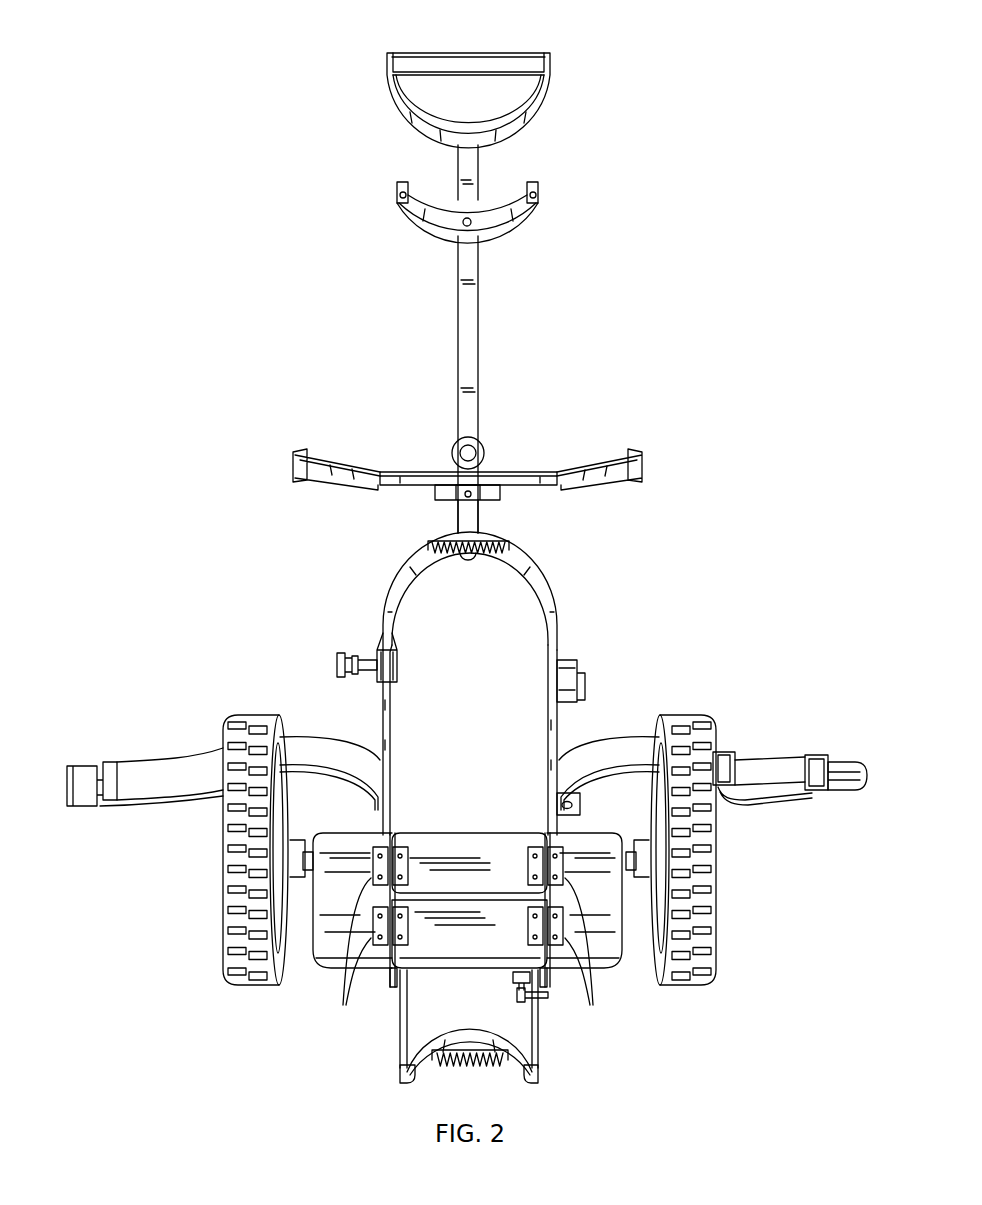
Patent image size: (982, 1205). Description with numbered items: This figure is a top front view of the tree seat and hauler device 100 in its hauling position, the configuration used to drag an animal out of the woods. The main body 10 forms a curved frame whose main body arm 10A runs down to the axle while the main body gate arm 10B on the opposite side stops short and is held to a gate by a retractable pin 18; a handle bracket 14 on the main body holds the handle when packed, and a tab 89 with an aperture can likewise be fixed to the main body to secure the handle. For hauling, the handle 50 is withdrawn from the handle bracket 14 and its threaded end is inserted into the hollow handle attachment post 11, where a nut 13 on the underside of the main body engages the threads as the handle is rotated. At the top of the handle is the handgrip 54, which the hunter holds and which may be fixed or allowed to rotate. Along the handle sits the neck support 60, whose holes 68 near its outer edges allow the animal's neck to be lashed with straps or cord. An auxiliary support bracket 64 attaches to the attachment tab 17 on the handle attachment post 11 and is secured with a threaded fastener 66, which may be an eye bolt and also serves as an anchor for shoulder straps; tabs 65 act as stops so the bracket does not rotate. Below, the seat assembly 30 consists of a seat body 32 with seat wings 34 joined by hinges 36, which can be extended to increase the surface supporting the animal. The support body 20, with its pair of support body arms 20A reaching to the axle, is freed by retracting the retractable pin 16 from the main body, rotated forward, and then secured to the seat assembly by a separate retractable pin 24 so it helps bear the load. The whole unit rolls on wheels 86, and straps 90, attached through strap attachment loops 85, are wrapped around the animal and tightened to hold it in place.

The tree seat and hauler device 100 is at (357, 372).
The handgrip 54 is at (512, 54).
The handle 50 is at (478, 358).
The neck support 60 is at (529, 218).
The holes 68 is at (406, 195).
The threaded fastener 66 is at (483, 447).
The auxiliary support bracket 64 is at (584, 472).
The tabs 65 is at (446, 496).
The attachment tab 17 is at (457, 487).
The handle attachment post 11 is at (457, 528).
The main body 10 is at (398, 561).
The main body arm 10A is at (557, 728).
The main body gate arm 10B is at (383, 612).
The nut 13 is at (476, 560).
The retractable pin 18 is at (337, 665).
The handle bracket 14 is at (578, 668).
The tab 89 is at (586, 805).
The straps 90 is at (178, 776).
The wheels 86 is at (255, 985).
The strap attachment loops 85 is at (307, 846).
The seat assembly 30 is at (467, 899).
The seat wings 34 is at (333, 948).
The seat body 32 is at (418, 950).
The hinges 36 is at (344, 1003).
The support body 20 is at (470, 1043).
The support body arms 20A is at (400, 1031).
The retractable pin 24 is at (513, 977).
The retractable pin 16 is at (517, 995).